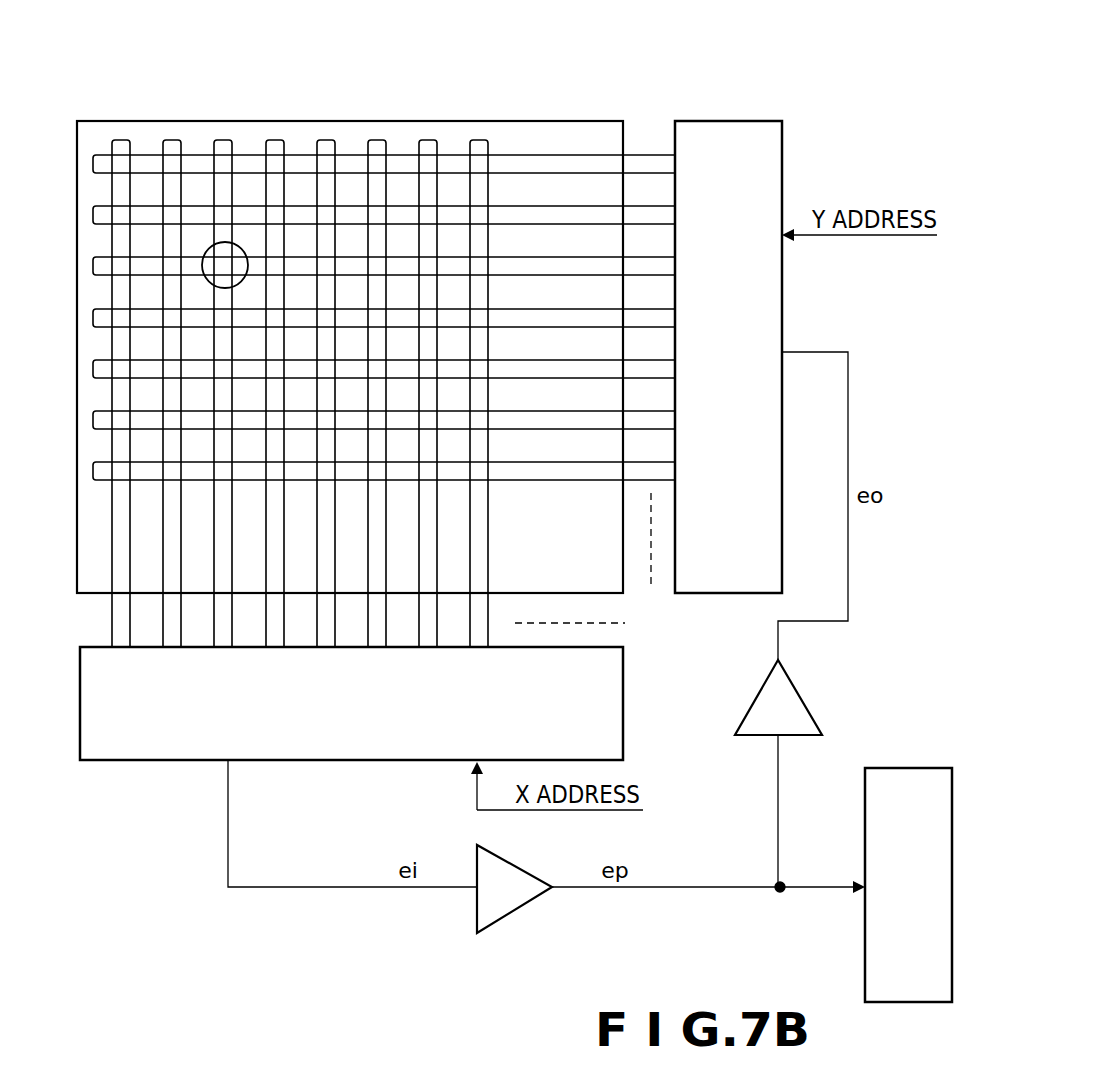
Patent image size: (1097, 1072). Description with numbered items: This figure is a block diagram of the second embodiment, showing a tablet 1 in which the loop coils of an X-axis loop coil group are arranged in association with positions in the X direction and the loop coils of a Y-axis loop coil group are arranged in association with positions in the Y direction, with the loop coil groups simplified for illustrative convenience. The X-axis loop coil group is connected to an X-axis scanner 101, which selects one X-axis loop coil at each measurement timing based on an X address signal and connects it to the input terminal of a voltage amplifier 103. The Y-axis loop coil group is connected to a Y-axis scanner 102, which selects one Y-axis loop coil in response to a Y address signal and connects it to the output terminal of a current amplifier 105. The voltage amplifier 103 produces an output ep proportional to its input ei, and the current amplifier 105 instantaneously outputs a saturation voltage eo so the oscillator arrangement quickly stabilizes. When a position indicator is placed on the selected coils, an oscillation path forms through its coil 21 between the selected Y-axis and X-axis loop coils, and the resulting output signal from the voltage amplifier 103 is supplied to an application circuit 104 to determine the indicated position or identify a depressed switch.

The tablet 1 is at (471, 103).
The coil 21 is at (243, 243).
The X-axis scanner 101 is at (120, 761).
The Y-axis scanner 102 is at (782, 147).
The voltage amplifier 103 is at (520, 911).
The application circuit 104 is at (925, 768).
The current amplifier 105 is at (752, 702).